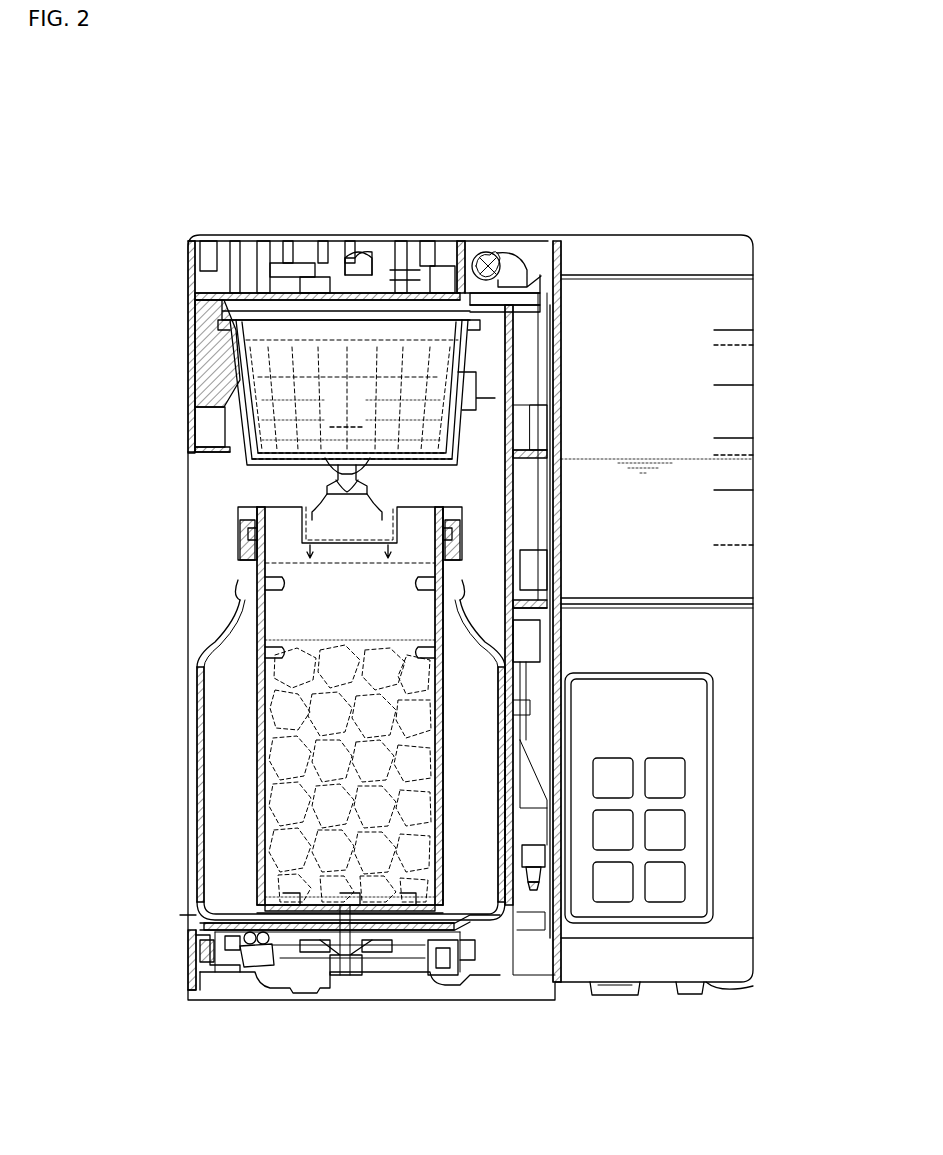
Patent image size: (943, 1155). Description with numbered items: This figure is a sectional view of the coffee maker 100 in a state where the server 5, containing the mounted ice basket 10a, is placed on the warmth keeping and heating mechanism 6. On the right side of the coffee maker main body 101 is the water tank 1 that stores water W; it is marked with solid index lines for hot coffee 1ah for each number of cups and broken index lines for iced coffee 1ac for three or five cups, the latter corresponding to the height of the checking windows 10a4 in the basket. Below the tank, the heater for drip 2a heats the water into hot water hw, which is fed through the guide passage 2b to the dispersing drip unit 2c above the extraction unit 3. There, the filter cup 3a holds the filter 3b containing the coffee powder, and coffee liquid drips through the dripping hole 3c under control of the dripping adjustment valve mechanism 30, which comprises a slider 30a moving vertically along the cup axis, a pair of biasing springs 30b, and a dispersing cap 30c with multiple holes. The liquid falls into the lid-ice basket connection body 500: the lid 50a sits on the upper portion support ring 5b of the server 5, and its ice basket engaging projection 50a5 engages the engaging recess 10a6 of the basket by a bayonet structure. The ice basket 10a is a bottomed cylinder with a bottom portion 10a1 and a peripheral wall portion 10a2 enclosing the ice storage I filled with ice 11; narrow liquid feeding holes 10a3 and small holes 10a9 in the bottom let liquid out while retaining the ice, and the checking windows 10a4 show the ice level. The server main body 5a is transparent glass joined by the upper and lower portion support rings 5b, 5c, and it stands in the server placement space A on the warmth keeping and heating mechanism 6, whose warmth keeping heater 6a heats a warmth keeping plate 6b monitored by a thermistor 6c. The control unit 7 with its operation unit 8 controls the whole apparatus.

The coffee maker 100 is at (222, 155).
The coffee maker main body 101 is at (765, 718).
The water tank 1 is at (659, 398).
The index lines for hot coffee 1ah is at (728, 330).
The index lines for iced coffee 1ac is at (730, 345).
The water W is at (628, 458).
The heater for drip 2a is at (535, 895).
The guide passage 2b is at (522, 275).
The dispersing drip unit 2c is at (356, 268).
The hot water hw is at (484, 252).
The extraction unit 3 is at (155, 305).
The filter cup 3a is at (214, 383).
The filter 3b is at (214, 428).
The dripping hole 3c is at (360, 482).
The dripping adjustment valve mechanism 30 is at (128, 464).
The slider 30a is at (322, 462).
The biasing springs 30b is at (330, 478).
The dispersing cap 30c is at (340, 494).
The lid-ice basket connection body 500 is at (132, 560).
The lid 50a is at (242, 522).
The ice basket engaging projection 50a5 is at (445, 545).
The ice basket 10a is at (257, 542).
The bottom portion 10a1 is at (436, 910).
The peripheral wall portion 10a2 is at (428, 760).
The liquid feeding hole 10a3 is at (296, 897).
The checking windows 10a4 is at (435, 582).
The engaging recess 10a6 is at (440, 535).
The small holes 10a9 is at (198, 950).
The ice 11 is at (330, 645).
The ice storage I is at (290, 805).
The server 5 is at (128, 688).
The server main body 5a is at (197, 740).
The upper portion support ring 5b is at (218, 645).
The lower portion support ring 5c is at (197, 860).
The warmth keeping and heating mechanism 6 is at (386, 1062).
The warmth keeping heater 6a is at (268, 980).
The warmth keeping plate 6b is at (345, 970).
The thermistor 6c is at (440, 975).
The control unit 7 is at (732, 834).
The operation unit 8 is at (698, 875).
The server placement space A is at (183, 916).